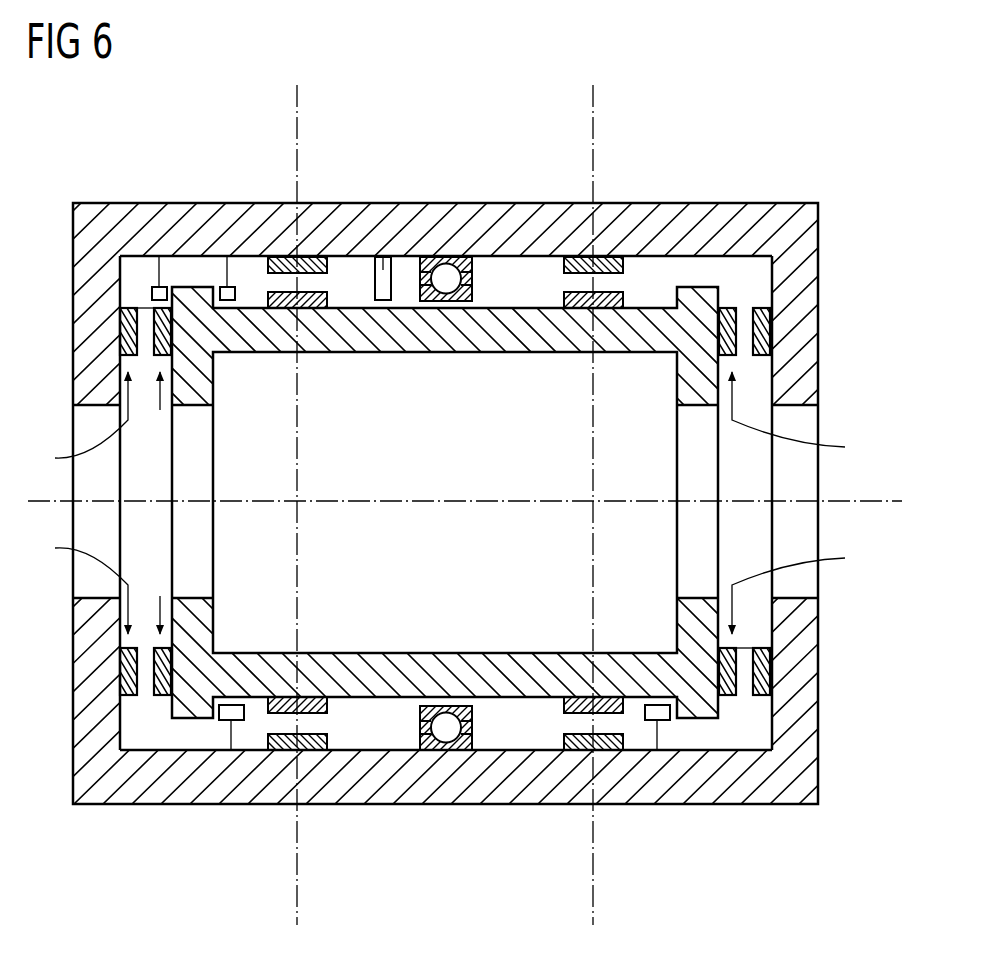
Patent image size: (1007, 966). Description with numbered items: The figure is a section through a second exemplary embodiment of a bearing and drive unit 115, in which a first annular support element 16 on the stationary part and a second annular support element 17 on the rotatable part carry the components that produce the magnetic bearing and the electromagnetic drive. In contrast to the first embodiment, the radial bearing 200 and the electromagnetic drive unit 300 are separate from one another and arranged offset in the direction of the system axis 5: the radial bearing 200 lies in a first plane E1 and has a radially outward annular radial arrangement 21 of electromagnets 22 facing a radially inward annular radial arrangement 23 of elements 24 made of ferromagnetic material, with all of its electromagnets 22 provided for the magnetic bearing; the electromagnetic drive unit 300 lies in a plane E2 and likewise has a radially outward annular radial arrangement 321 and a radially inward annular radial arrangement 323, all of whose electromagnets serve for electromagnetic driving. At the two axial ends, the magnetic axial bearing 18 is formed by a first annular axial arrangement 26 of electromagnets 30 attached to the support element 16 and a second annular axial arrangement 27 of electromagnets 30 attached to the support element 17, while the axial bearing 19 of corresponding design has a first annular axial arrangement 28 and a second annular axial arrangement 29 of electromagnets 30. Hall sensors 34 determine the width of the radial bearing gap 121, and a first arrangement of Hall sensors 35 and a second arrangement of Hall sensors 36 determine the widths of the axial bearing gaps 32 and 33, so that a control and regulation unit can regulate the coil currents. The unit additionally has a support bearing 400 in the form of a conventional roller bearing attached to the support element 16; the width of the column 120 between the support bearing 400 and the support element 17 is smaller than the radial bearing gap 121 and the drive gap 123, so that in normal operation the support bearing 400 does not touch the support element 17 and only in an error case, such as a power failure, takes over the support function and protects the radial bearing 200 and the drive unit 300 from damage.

The axis 5 is at (888, 500).
The first annular support element 16 is at (810, 252).
The second annular support element 17 is at (498, 340).
The magnetic axial bearing 18 is at (141, 280).
The magnetic axial bearing 19 is at (759, 282).
The radially outward annular radial arrangement 21 is at (290, 244).
The electromagnets 22 is at (290, 256).
The radially inward annular radial arrangement 23 is at (290, 325).
The elements made of a ferromagnetic material 24 is at (286, 302).
The first annular axial arrangement 26 is at (118, 396).
The second annular axial arrangement 27 is at (96, 503).
The first annular axial arrangement 28 is at (764, 372).
The second annular axial arrangement 29 is at (795, 503).
The electromagnets 30 is at (164, 306).
The axial bearing gap 32 is at (147, 306).
The axial bearing gap 33 is at (745, 690).
The Hall sensors 34 is at (383, 256).
The first arrangement of Hall sensors 35 is at (236, 721).
The second arrangement of Hall sensors 36 is at (157, 285).
The bearing and drive unit 115 is at (698, 117).
The column 120 is at (445, 301).
The radial bearing gap 121 is at (305, 286).
The drive gap 123 is at (605, 286).
The radial bearing 200 is at (316, 244).
The electromagnetic drive unit 300 is at (611, 244).
The radially outward annular radial arrangement 321 is at (583, 244).
The radially inward annular radial arrangement 323 is at (585, 325).
The support bearing 400 is at (447, 262).
The first plane E1 is at (297, 912).
The plane E2 is at (593, 912).